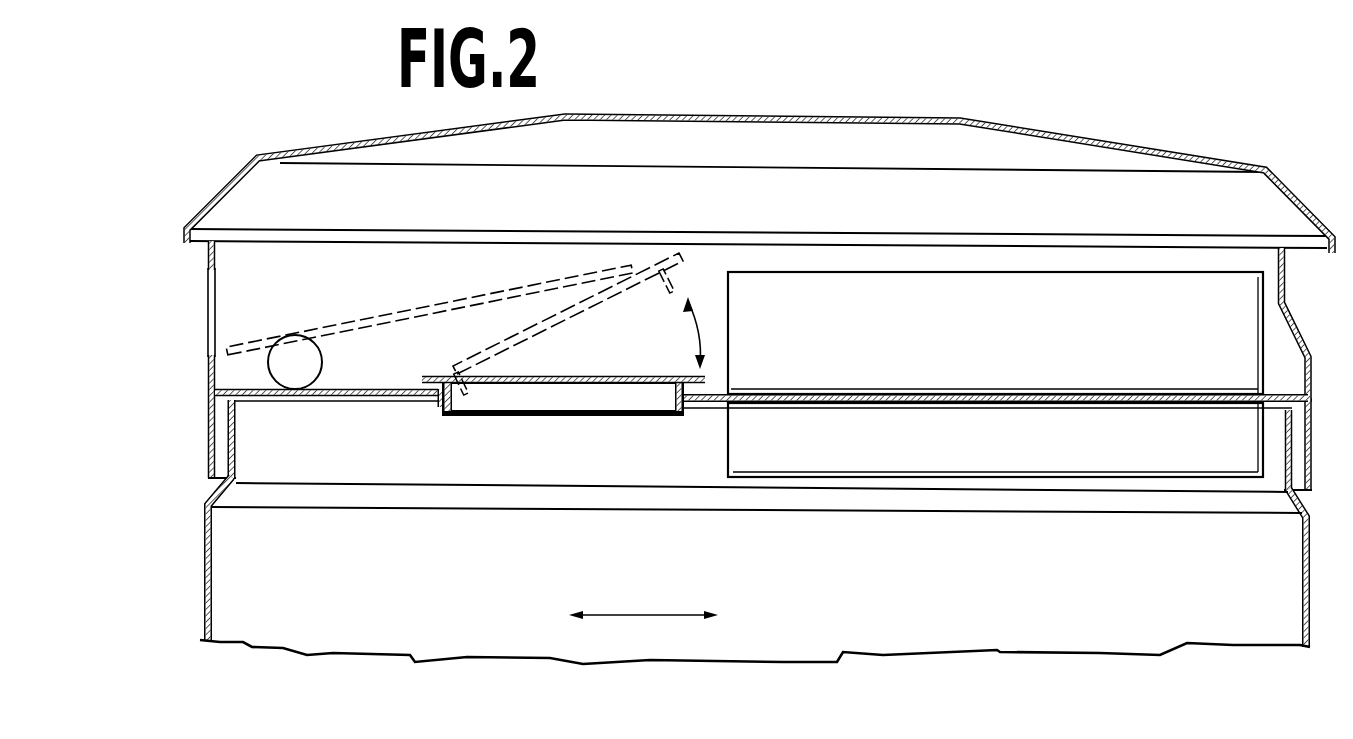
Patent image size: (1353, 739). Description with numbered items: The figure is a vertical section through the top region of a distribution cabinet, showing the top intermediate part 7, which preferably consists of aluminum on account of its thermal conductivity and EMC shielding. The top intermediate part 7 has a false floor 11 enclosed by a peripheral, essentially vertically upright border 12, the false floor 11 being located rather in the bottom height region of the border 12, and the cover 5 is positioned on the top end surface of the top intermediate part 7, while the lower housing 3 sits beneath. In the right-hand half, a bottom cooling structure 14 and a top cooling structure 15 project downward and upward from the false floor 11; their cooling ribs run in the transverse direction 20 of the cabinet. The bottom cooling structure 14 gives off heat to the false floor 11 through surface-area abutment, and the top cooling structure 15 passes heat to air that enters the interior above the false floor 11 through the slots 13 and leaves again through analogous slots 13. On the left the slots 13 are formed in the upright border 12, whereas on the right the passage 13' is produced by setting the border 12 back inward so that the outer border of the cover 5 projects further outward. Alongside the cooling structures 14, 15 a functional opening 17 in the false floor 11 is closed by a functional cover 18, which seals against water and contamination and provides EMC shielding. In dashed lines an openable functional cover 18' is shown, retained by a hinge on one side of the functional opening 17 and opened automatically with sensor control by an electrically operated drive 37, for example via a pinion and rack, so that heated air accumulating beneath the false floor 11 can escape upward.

The lower housing part 3 is at (182, 555).
The cover 5 is at (303, 156).
The top intermediate part 7 is at (184, 365).
The false floor 11 is at (705, 409).
The peripheral border 12 is at (207, 448).
The slots 13 is at (190, 299).
The side wall of upper housing part 13' is at (1310, 325).
The bottom cooling structure 14 is at (1085, 458).
The top cooling structure 15 is at (1078, 298).
The functional opening 17 is at (439, 408).
The functional cover 18 is at (563, 417).
The functional cover 18' is at (579, 324).
The transverse direction 20 is at (656, 614).
The electrically operated drive 37 is at (428, 305).